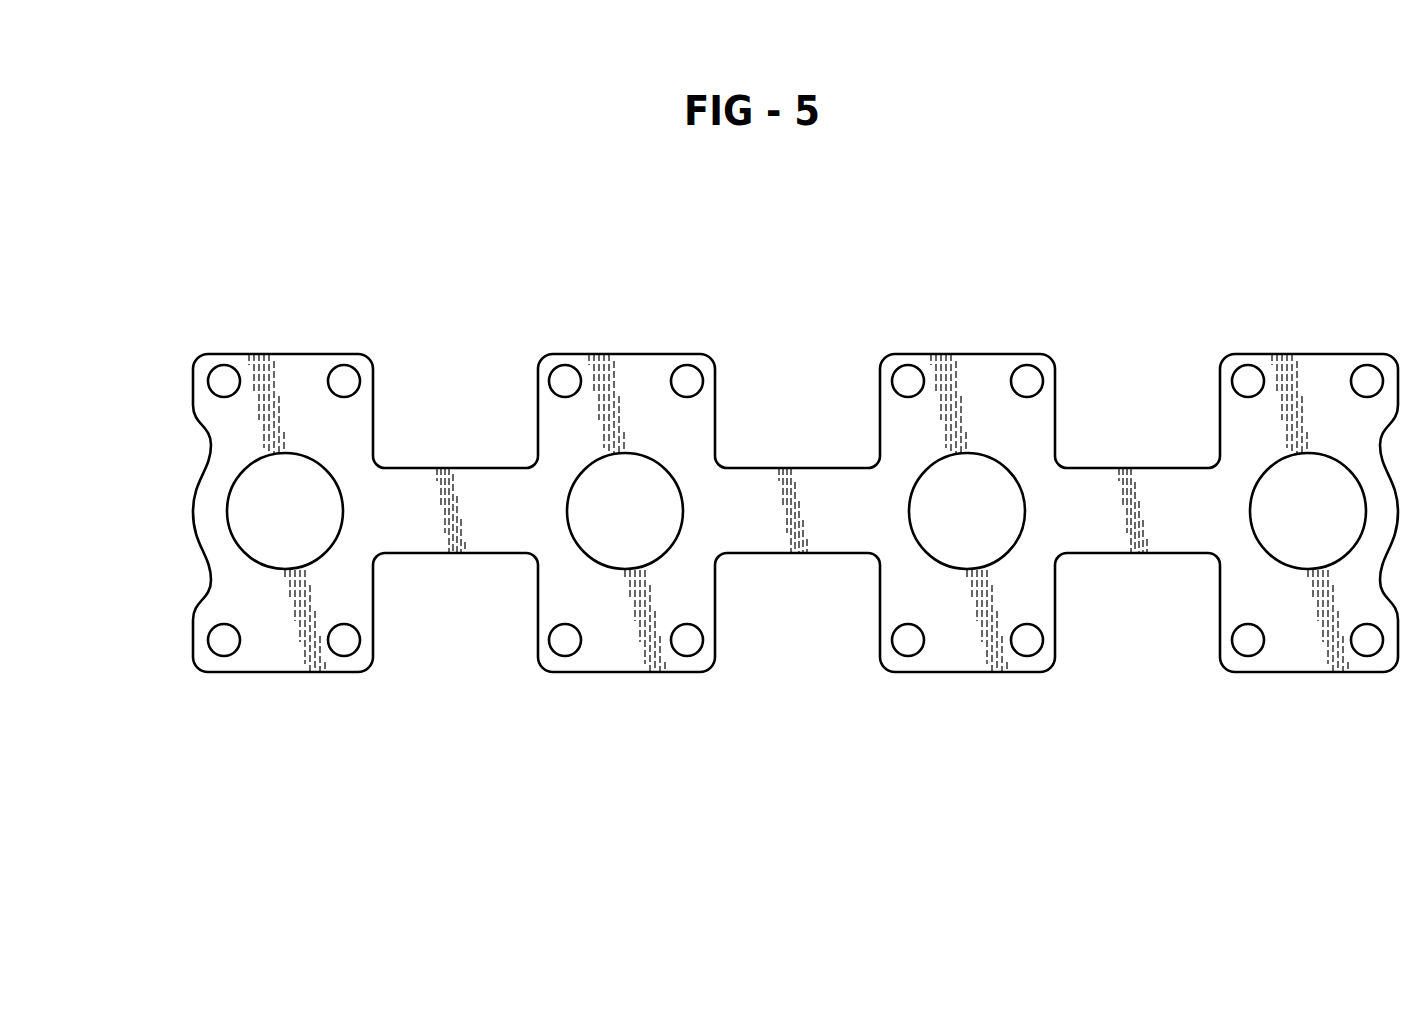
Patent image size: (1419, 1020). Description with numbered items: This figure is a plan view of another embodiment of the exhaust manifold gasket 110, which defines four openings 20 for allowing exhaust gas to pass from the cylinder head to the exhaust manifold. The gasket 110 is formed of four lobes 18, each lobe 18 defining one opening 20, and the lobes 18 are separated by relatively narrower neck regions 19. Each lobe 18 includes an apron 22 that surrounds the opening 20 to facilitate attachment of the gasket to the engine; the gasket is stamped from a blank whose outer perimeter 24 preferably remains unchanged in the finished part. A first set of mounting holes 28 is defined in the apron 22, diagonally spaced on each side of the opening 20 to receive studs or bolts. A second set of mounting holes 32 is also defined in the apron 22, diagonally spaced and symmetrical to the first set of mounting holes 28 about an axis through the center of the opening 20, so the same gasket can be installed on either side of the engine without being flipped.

The exhaust manifold gasket 110 is at (837, 308).
The lobe 18 is at (300, 350).
The neck region 19 is at (795, 560).
The opening 20 is at (228, 508).
The apron 22 is at (272, 655).
The outer perimeter 24 is at (580, 350).
The first set of mounting holes 28 is at (345, 382).
The second set of mounting holes 32 is at (228, 378).